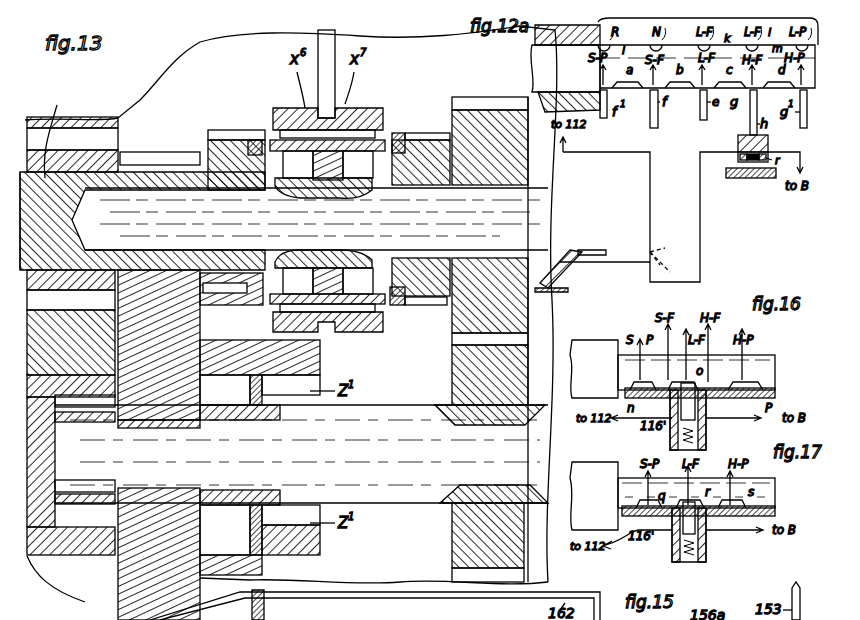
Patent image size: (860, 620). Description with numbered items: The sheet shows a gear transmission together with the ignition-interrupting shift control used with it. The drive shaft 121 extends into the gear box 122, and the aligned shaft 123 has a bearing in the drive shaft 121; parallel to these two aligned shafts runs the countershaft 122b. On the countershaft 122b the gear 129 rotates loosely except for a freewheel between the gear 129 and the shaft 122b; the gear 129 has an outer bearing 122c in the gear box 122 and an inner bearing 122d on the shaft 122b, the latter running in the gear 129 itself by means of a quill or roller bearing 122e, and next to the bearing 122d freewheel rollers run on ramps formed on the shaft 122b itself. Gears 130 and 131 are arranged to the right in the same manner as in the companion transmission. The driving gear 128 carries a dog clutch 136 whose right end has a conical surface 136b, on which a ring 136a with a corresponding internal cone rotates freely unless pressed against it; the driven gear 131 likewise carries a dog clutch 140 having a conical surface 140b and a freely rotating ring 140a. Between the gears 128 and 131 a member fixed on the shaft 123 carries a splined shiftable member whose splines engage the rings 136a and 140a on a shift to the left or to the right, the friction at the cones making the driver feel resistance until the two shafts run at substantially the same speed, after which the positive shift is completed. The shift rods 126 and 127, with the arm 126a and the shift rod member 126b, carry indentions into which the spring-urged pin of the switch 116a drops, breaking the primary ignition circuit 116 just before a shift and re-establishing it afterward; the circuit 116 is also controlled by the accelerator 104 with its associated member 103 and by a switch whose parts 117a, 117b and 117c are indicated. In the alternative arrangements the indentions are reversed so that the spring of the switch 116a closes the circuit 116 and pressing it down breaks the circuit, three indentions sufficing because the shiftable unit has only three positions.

In FIG. 13, the drive shaft 121 is at (61, 131).
In FIG. 13, the gear box 122 is at (95, 118).
In FIG. 13, the countershaft 122b is at (428, 405).
In FIG. 13, the outer bearing 122c is at (78, 505).
In FIG. 13, the inner bearing 122d is at (228, 505).
In FIG. 13, the quill or roller bearing 122e is at (112, 407).
In FIG. 13, the aligned shaft 123 is at (316, 218).
In FIG. 12A, the shift rod 126 is at (532, 65).
In FIG. 16, the shift rod 126 is at (765, 374).
In FIG. 17, the shift rod 126 is at (765, 497).
In FIG. 13, the arm 126a is at (336, 58).
In FIG. 16, the shift rod member 126b is at (594, 369).
In FIG. 17, the shift rod member 126b is at (594, 496).
In FIG. 12A, the shift rod 127 is at (535, 38).
In FIG. 13, the driving gear 128 is at (160, 152).
In FIG. 13, the gear 129 is at (197, 605).
In FIG. 13, the gear 130 is at (452, 560).
In FIG. 13, the driven gear 131 is at (470, 100).
In FIG. 13, the dog clutch 136 is at (212, 138).
In FIG. 13, the ring 136a is at (258, 140).
In FIG. 13, the conical surface 136b is at (245, 160).
In FIG. 13, the dog clutch 140 is at (427, 140).
In FIG. 13, the ring 140a is at (398, 132).
In FIG. 13, the conical surface 140b is at (410, 298).
In FIG. 12A, the lever 103 is at (596, 250).
In FIG. 12A, the accelerator 104 is at (560, 272).
In FIG. 12A, the primary circuit 116 is at (652, 180).
In FIG. 16, the primary circuit 116 is at (735, 422).
In FIG. 12A, the switch 116a is at (738, 146).
In FIG. 16, the switch 116a is at (694, 408).
In FIG. 17, the switch 116a is at (706, 543).
In FIG. 12A, the passage 117a is at (650, 268).
In FIG. 12A, the passage 117b is at (675, 264).
In FIG. 12A, the passage 117c is at (674, 252).